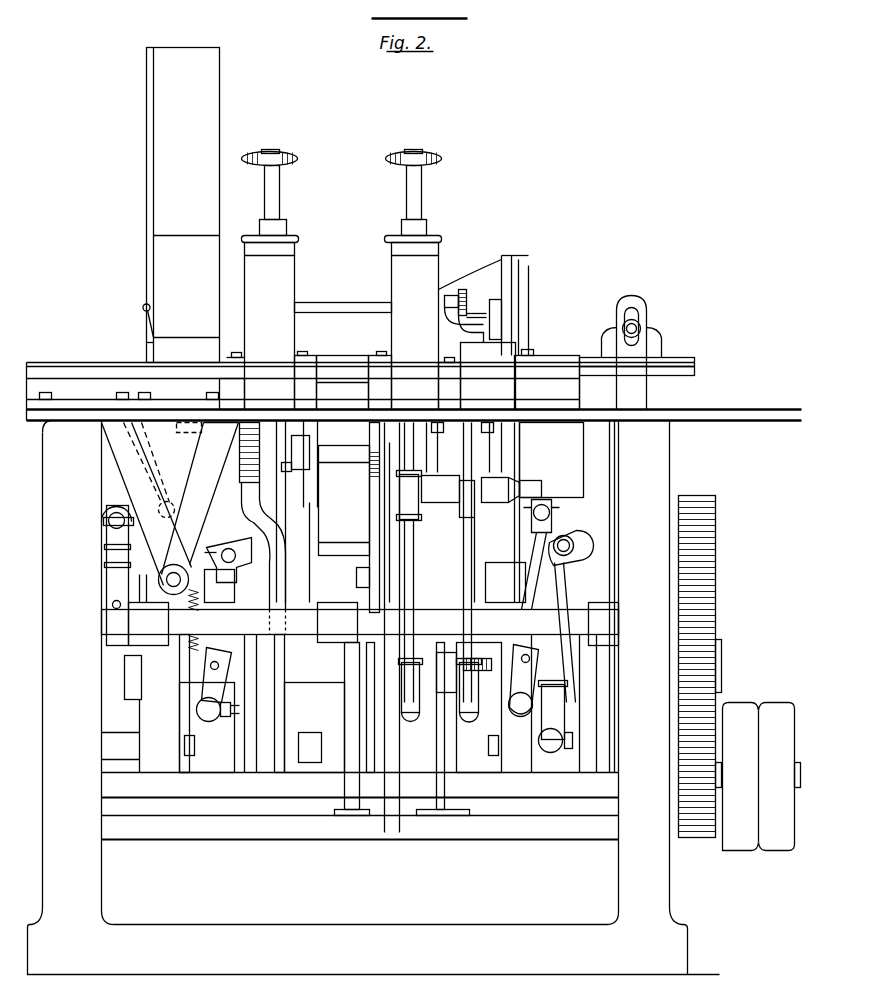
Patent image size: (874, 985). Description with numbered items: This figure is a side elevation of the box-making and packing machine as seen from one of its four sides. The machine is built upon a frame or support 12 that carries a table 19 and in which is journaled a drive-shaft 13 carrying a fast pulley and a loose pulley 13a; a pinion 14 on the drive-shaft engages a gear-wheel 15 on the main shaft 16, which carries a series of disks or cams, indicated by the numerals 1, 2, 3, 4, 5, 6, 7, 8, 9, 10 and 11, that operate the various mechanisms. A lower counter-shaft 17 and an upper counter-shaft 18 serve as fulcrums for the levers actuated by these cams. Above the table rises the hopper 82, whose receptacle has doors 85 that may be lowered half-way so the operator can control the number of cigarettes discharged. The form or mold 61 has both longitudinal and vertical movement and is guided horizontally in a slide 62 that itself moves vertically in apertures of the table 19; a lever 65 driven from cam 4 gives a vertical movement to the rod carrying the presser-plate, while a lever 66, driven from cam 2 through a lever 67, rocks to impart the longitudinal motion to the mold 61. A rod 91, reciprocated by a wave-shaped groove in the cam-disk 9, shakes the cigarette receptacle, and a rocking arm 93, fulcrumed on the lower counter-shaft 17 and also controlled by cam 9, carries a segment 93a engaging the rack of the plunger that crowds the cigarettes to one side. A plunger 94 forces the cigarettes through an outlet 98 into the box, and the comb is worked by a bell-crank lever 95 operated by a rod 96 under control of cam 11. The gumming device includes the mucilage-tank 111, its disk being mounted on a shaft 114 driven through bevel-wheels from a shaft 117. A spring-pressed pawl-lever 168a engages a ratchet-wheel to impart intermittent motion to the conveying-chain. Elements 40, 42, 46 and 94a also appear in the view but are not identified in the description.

The cam 1 is at (601, 704).
The cam 2 is at (581, 704).
The cam 3 is at (531, 704).
The cam 4 is at (483, 708).
The cam 5 is at (469, 681).
The cam 6 is at (439, 666).
The cam 7 is at (365, 708).
The cam 8 is at (338, 615).
The cam-disk 9 is at (257, 704).
The cam 10 is at (202, 685).
The cam 11 is at (168, 704).
The frame 12 is at (374, 698).
The drive-shaft 13 is at (550, 787).
The fast pulley and loose pulley 13a is at (762, 777).
The pinion 14 is at (695, 840).
The gear-wheel 15 is at (718, 588).
The main shaft 16 is at (402, 690).
The lower counter-shaft 17 is at (310, 748).
The upper counter-shaft 18 is at (360, 624).
The table 19 is at (753, 420).
The pipe 40 is at (425, 492).
The rod 42 is at (410, 548).
The rod 46 is at (390, 582).
The form or mold 61 is at (670, 360).
The slide 62 is at (578, 465).
The lever 65 is at (535, 540).
The lever 66 is at (633, 397).
The lever 67 is at (556, 665).
The hopper 82 is at (181, 205).
The doors 85 is at (148, 340).
The rod 91 is at (200, 499).
The rocking arm 93 is at (279, 598).
The segment 93a is at (170, 507).
The plunger 94 is at (222, 540).
The pulley 94a is at (172, 570).
The bell-crank lever 95 is at (142, 452).
The rod 96 is at (113, 572).
The outlet 98 is at (187, 610).
The mucilage-tank 111 is at (342, 280).
The shaft 114 is at (475, 522).
The shaft 117 is at (322, 305).
The pawl-lever 168a is at (372, 600).